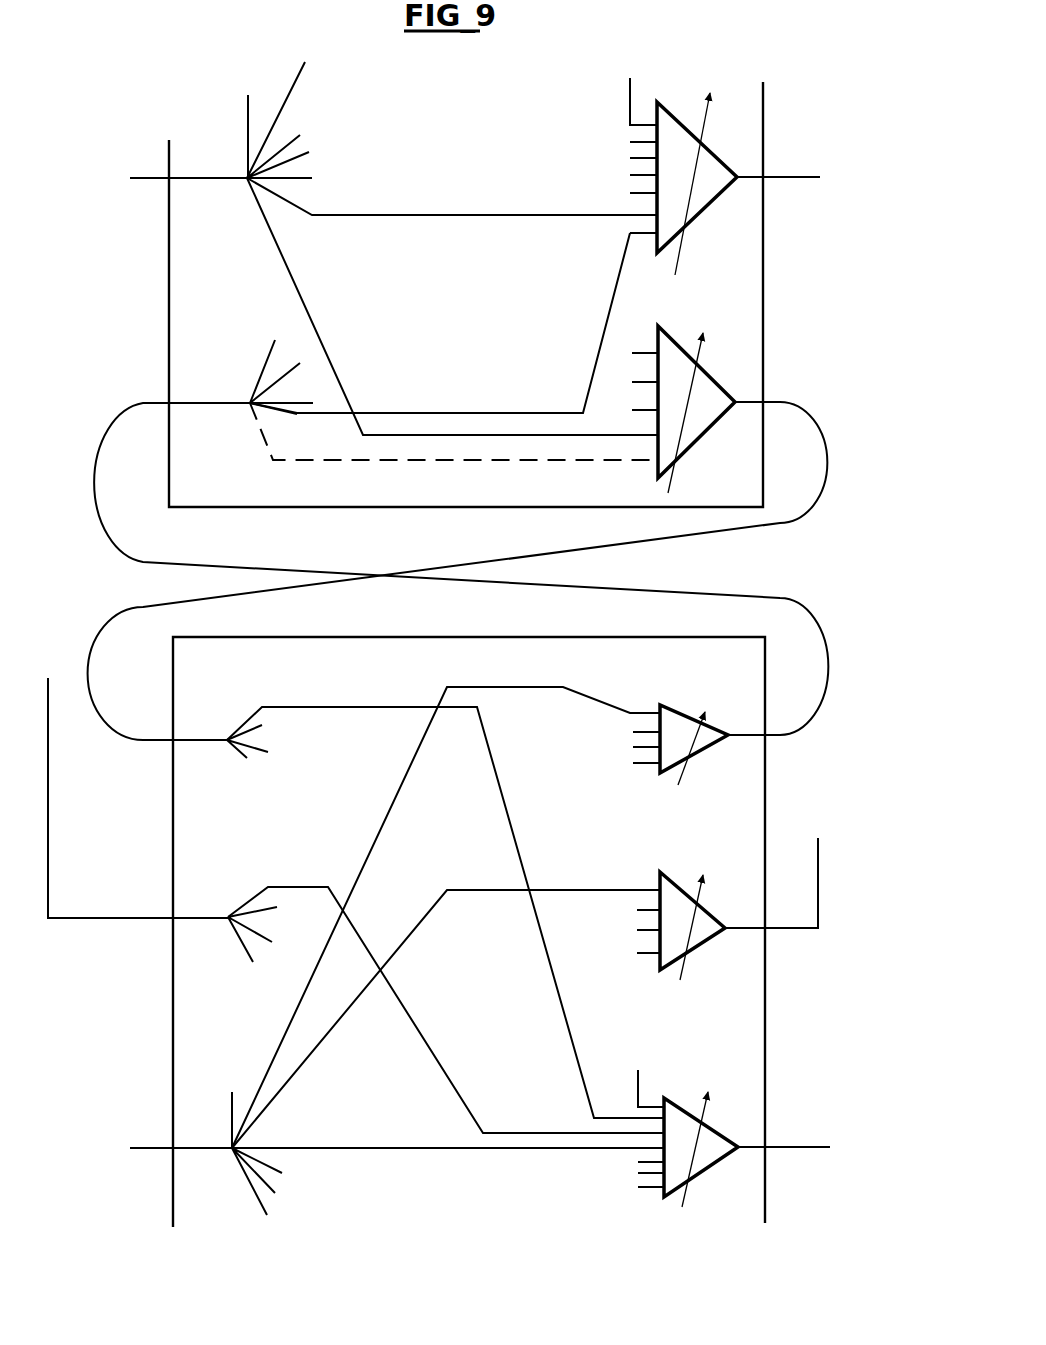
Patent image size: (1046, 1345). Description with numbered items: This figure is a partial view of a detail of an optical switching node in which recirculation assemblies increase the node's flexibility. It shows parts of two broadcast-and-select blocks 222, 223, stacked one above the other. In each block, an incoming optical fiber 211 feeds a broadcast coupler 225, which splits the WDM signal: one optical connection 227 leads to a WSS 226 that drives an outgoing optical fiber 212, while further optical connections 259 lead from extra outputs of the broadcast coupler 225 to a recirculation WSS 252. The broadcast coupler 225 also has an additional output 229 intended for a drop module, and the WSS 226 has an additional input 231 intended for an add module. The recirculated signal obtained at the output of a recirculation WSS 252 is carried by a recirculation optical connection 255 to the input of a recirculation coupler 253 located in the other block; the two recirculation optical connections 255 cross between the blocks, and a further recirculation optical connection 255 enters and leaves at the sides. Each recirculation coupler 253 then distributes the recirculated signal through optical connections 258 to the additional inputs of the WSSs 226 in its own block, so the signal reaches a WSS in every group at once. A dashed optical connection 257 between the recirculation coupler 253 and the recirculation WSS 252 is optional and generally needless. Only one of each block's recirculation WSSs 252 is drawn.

The incoming optical fiber 211 is at (143, 178).
The outgoing optical fiber 212 is at (790, 177).
The block 222 is at (325, 508).
The block 223 is at (455, 637).
The broadcast coupler 225 is at (240, 184).
The WSS 226 is at (678, 113).
The optical connection 227 is at (437, 214).
The additional output 229 is at (248, 118).
The additional input 231 is at (633, 85).
The recirculation WSS 252 is at (675, 335).
The recirculation coupler 253 is at (243, 395).
The recirculation optical connection 255 is at (790, 525).
The optical connection 257 is at (385, 462).
The optical connection 258 is at (600, 337).
The optical connection 259 is at (297, 83).